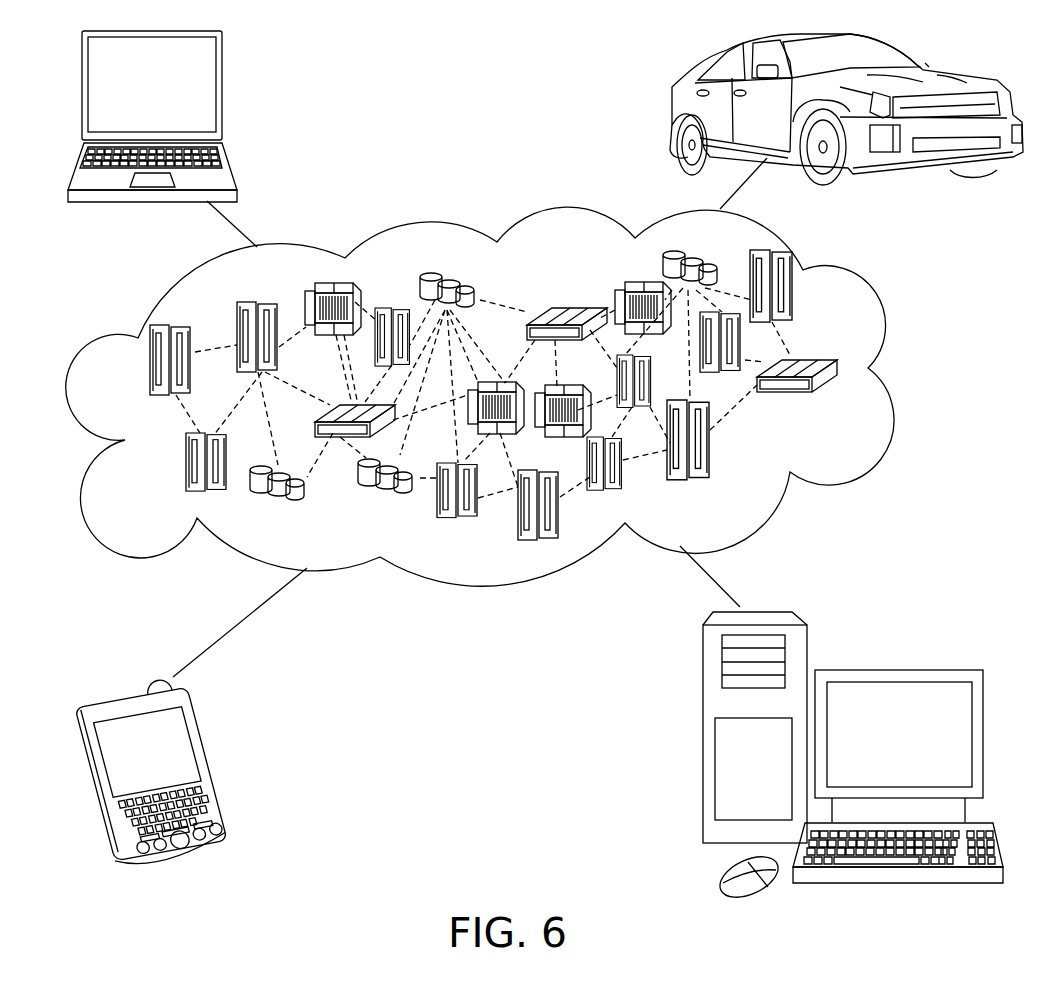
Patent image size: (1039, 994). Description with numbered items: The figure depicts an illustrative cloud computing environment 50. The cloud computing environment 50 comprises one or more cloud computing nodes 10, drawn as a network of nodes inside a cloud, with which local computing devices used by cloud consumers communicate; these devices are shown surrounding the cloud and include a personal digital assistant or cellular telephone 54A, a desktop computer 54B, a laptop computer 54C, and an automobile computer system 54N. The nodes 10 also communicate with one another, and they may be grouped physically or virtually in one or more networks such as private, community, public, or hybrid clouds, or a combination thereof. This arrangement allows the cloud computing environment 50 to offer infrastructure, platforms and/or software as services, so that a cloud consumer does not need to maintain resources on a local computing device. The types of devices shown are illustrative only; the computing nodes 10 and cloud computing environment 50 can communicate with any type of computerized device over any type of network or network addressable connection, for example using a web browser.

The cloud computing nodes 10 is at (840, 403).
The cloud computing environment 50 is at (892, 374).
The personal digital assistant (PDA) or cellular telephone 54A is at (212, 762).
The desktop computer 54B is at (895, 668).
The laptop computer 54C is at (223, 92).
The automobile computer system 54N is at (670, 108).